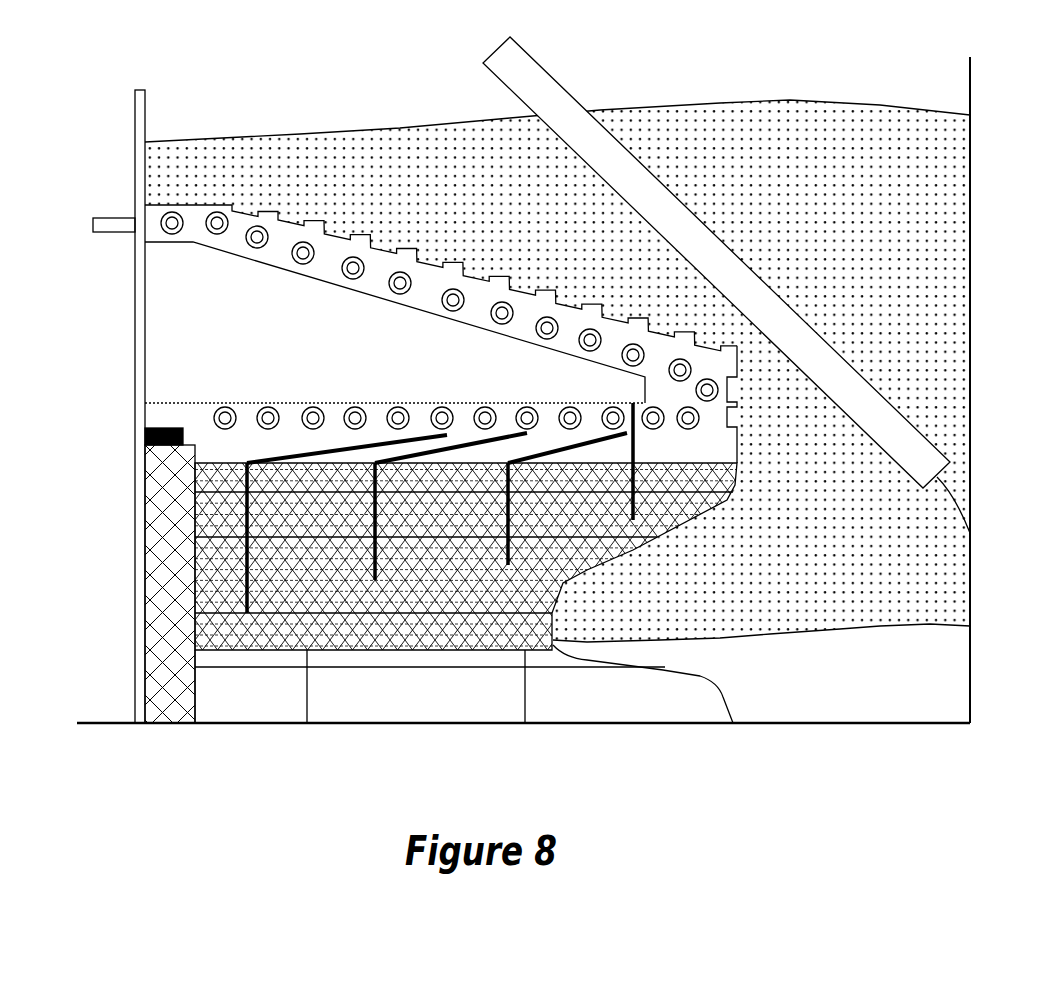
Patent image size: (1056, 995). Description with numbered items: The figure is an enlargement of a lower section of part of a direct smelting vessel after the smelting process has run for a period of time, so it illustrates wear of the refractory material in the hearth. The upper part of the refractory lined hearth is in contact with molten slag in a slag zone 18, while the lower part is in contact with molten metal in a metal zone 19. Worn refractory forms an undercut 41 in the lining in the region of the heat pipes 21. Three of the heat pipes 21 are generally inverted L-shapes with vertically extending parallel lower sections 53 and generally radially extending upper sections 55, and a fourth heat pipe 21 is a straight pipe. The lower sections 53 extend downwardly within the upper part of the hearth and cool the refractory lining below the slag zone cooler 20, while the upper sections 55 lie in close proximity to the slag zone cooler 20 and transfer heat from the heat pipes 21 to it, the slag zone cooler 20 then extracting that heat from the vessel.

The slag zone 18 is at (958, 238).
The metal zone 19 is at (960, 672).
The slag zone cooler 20 is at (342, 356).
The heat pipes 21 is at (291, 450).
The undercut 41 is at (625, 605).
The lower sections 53 is at (512, 490).
The upper sections 55 is at (384, 452).